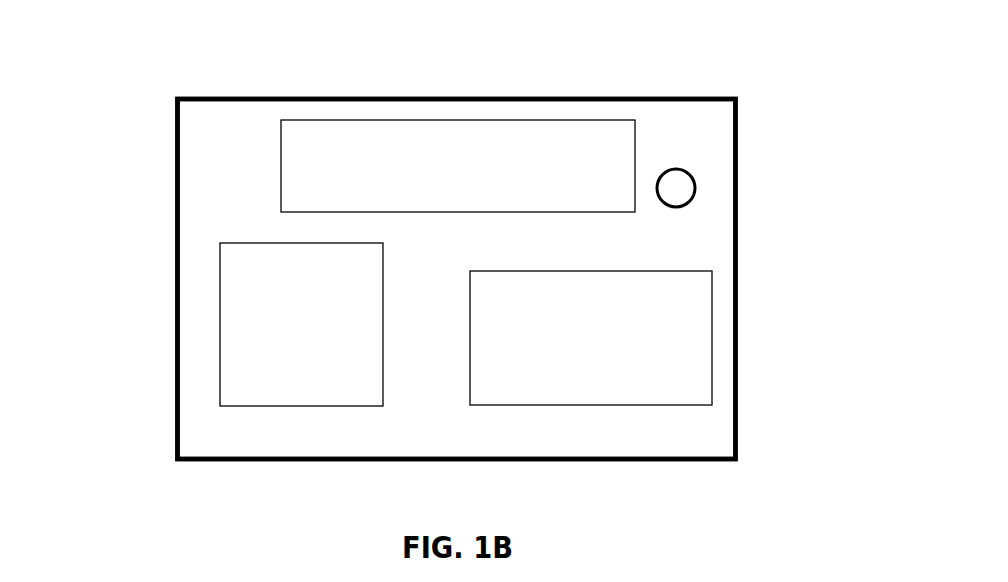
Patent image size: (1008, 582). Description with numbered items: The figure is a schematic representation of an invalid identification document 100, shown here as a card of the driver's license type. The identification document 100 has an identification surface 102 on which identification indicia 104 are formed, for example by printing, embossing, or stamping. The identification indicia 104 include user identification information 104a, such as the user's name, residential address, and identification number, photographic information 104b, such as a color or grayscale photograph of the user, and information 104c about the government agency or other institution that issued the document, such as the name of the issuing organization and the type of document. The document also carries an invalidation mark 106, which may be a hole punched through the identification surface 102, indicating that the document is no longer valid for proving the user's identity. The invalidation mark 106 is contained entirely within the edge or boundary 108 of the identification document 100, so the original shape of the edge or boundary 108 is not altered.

The identification document 100 is at (566, 72).
The identification surface 102 is at (427, 432).
The identification indicia 104 is at (713, 375).
The user identification information 104a is at (645, 325).
The photographic information 104b is at (252, 339).
The information about the issuing institution 104c is at (558, 162).
The invalidation mark 106 is at (670, 188).
The edge or boundary 108 is at (175, 205).